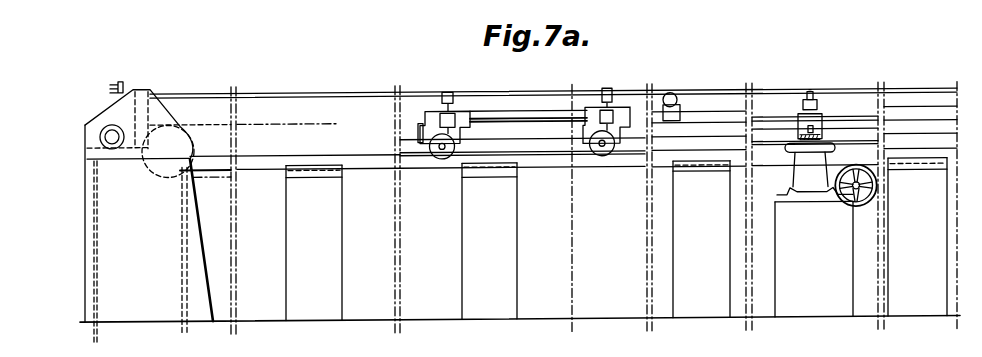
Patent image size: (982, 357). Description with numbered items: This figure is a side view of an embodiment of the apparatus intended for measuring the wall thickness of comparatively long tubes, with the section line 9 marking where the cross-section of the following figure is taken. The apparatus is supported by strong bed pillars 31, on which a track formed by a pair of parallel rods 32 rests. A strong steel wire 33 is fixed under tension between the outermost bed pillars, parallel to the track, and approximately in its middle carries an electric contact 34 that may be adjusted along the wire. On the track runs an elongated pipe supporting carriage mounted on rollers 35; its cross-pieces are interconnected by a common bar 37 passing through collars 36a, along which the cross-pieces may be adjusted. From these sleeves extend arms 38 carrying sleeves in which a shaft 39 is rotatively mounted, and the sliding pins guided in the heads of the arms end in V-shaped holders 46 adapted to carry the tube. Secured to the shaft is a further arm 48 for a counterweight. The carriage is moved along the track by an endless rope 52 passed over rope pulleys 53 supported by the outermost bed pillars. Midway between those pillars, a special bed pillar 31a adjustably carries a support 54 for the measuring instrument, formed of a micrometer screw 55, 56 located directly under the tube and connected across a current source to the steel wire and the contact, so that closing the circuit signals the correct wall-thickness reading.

The section line 9— 9 is at (655, 208).
The bed pillars 31 is at (200, 293).
The special bed pillar 31a is at (843, 270).
The parallel rods 32 is at (268, 163).
The steel wire 33 is at (485, 92).
The electric contact 34 is at (809, 94).
The rollers 35 is at (445, 158).
The collars 36a is at (418, 132).
The common bar 37 is at (630, 127).
The arms 38 is at (597, 114).
The shaft 39 is at (518, 112).
The V-shaped holders 46 is at (449, 92).
The further arm 48 is at (679, 110).
The endless rope 52 is at (328, 122).
The rope pulleys 53 is at (177, 127).
The support 54 is at (798, 179).
The micrometer screw 55 is at (797, 134).
The micrometer screw 56 is at (818, 98).